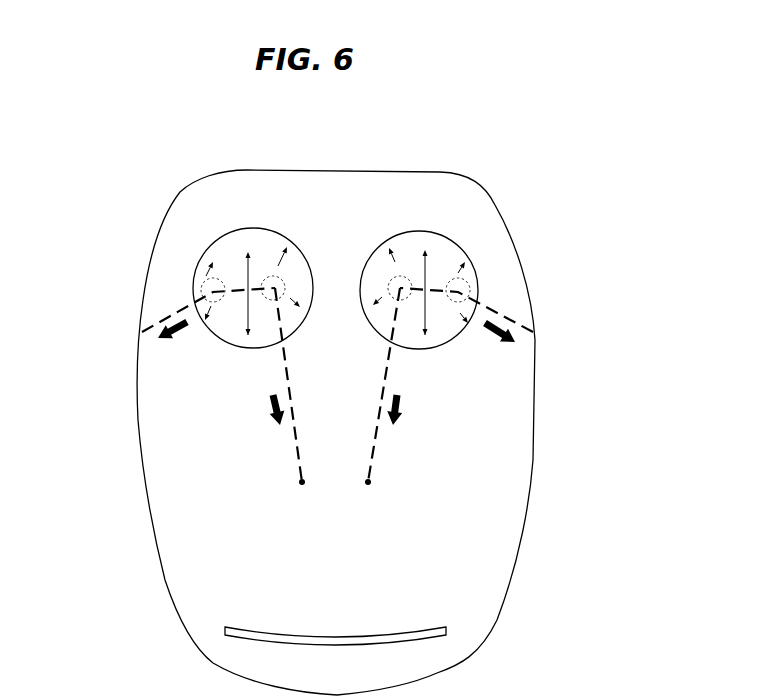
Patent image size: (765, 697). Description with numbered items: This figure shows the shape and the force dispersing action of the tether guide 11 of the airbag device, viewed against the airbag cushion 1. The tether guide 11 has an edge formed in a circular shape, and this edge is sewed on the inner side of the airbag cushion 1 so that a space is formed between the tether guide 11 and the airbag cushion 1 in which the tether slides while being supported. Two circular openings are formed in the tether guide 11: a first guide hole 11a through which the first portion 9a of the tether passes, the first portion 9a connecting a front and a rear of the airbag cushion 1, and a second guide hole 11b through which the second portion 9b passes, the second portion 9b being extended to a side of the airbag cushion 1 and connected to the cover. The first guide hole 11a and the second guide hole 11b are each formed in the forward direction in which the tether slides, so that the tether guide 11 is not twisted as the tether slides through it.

The airbag cushion 1 is at (405, 183).
The first portion 9a is at (280, 355).
The second portion 9b is at (170, 312).
The tether guide 11 is at (250, 250).
The first guide hole 11a is at (274, 274).
The second guide hole 11b is at (207, 282).